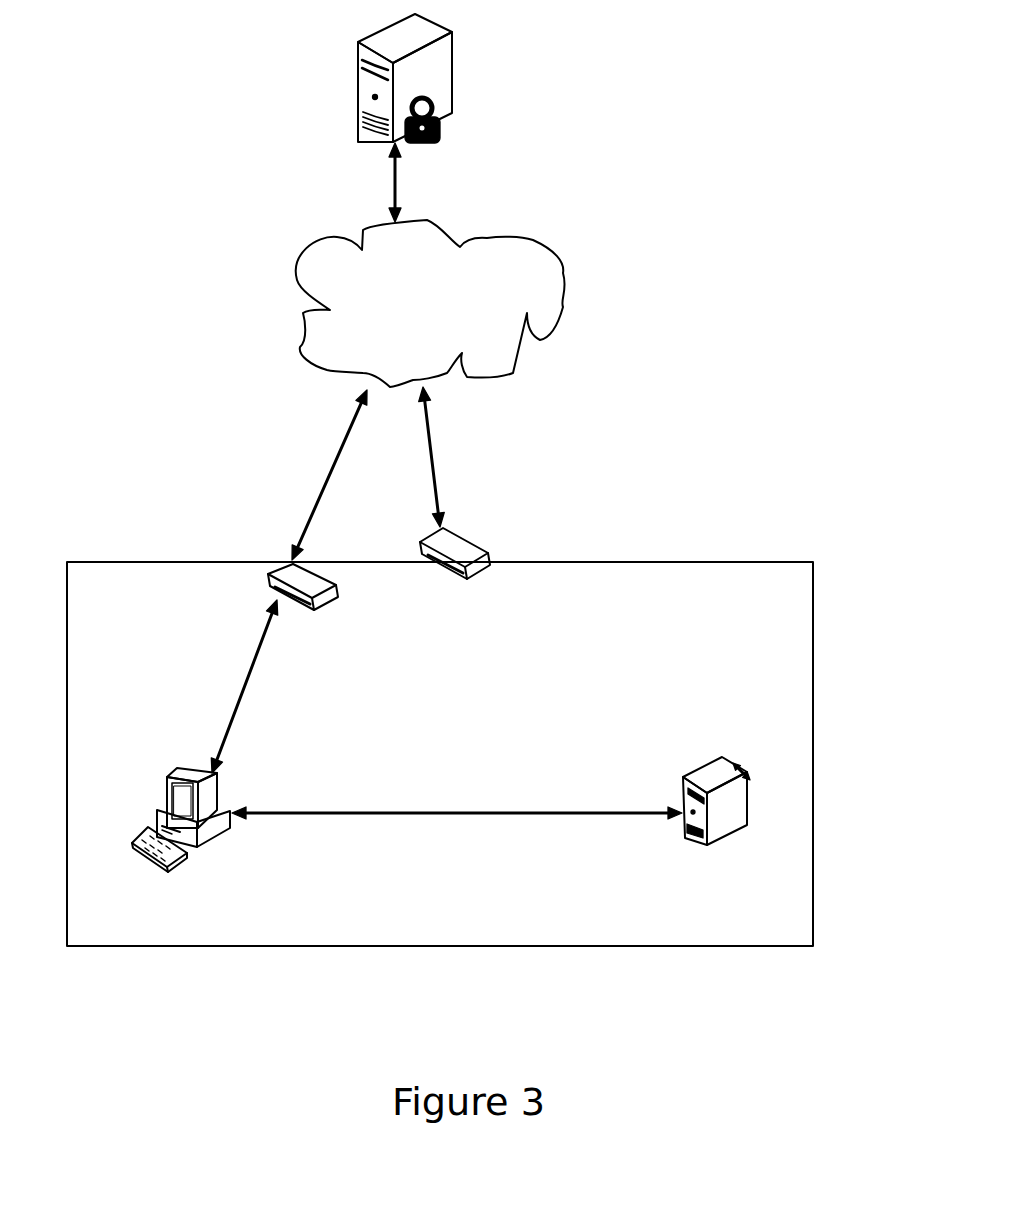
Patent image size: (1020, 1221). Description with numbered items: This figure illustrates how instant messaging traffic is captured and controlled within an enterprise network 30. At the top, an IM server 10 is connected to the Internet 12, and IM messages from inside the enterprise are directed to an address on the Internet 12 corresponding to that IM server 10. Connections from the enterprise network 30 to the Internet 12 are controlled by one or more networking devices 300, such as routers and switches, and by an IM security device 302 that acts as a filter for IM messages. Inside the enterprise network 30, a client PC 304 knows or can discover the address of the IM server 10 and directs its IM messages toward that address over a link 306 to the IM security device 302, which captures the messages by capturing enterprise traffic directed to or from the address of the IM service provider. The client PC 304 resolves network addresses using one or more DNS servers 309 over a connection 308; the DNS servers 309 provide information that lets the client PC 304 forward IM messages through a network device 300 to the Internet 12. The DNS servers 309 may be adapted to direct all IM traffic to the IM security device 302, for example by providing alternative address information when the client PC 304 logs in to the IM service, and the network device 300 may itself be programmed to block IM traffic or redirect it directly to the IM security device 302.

The IM server 10 is at (452, 77).
The Internet 12 is at (533, 270).
The enterprise network 30 is at (172, 588).
The networking device 300 is at (485, 552).
The IM security device 302 is at (300, 583).
The client PC 304 is at (193, 847).
The communication link between client and router 306 is at (247, 687).
The communication link between client and server 308 is at (488, 813).
The DNS server 309 is at (713, 802).